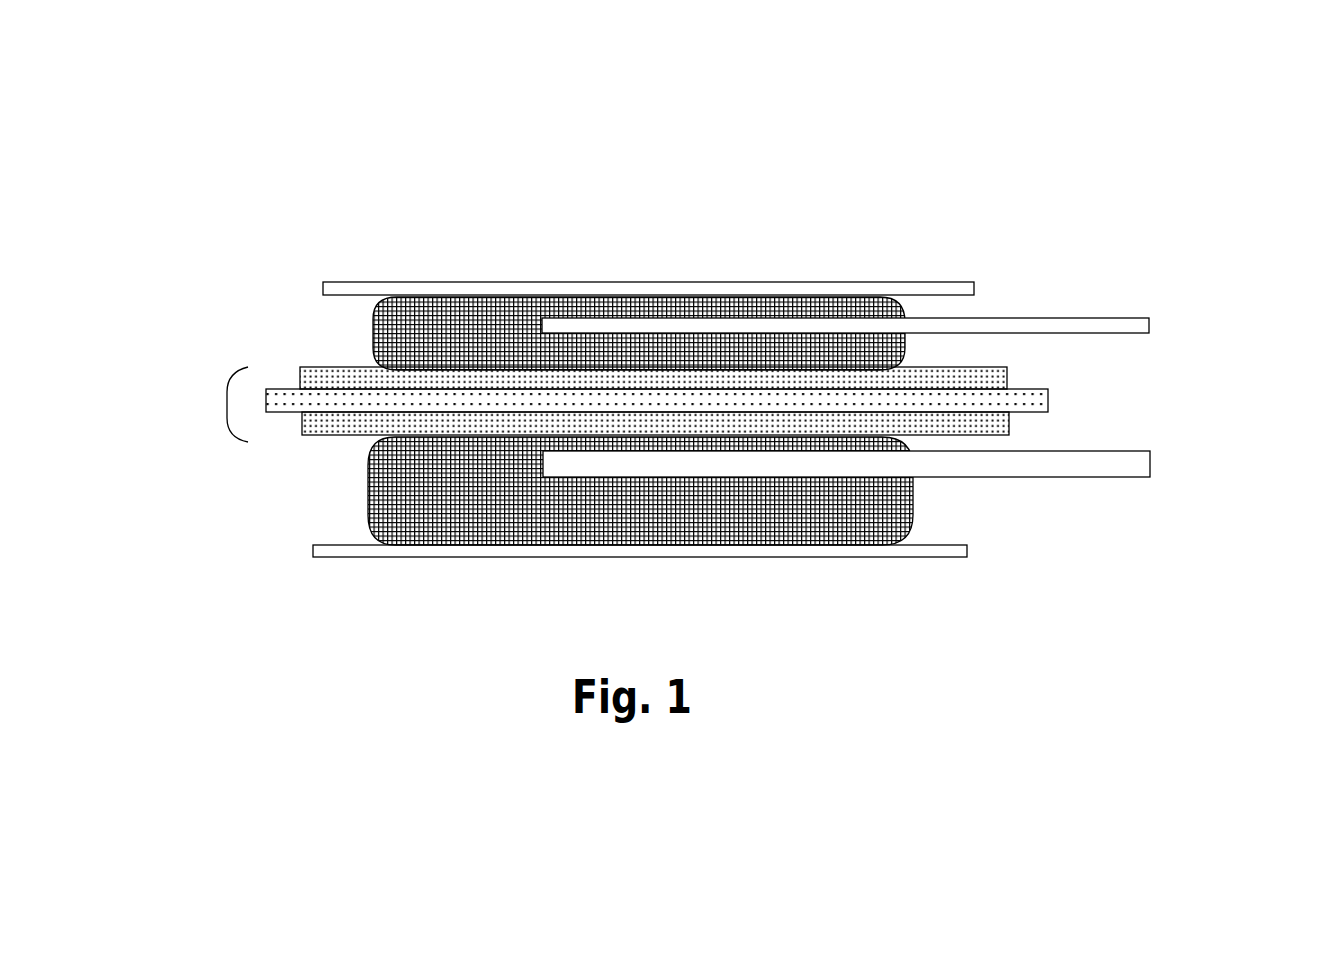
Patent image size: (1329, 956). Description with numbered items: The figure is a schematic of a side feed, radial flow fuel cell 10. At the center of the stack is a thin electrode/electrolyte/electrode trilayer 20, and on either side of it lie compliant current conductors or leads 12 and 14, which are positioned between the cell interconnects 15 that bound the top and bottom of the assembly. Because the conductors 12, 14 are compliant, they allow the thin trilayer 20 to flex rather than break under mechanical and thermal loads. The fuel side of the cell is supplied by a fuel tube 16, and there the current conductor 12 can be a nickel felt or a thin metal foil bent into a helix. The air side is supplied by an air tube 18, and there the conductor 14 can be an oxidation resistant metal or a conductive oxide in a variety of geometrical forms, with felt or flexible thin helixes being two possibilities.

The side feed fuel cell 10 is at (670, 350).
The compliant current conductor 12 is at (723, 298).
The compliant current conductor 14 is at (746, 474).
The cell interconnects 15 is at (1063, 627).
The fuel tube 16 is at (1142, 301).
The air tube 18 is at (921, 418).
The electrode/electrolyte/electrode trilayer 20 is at (181, 409).